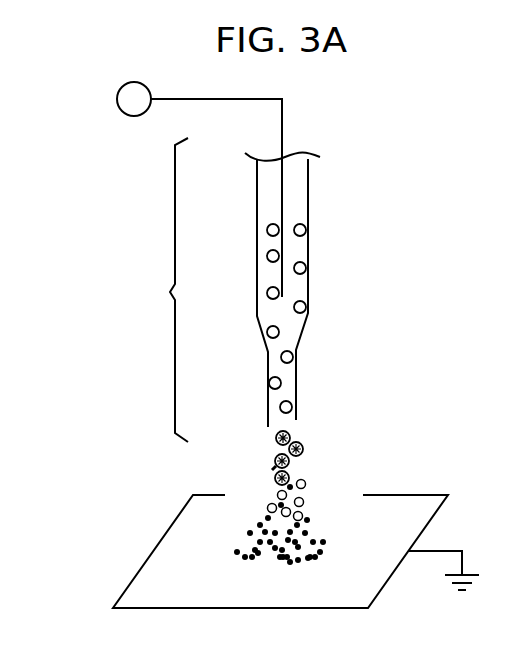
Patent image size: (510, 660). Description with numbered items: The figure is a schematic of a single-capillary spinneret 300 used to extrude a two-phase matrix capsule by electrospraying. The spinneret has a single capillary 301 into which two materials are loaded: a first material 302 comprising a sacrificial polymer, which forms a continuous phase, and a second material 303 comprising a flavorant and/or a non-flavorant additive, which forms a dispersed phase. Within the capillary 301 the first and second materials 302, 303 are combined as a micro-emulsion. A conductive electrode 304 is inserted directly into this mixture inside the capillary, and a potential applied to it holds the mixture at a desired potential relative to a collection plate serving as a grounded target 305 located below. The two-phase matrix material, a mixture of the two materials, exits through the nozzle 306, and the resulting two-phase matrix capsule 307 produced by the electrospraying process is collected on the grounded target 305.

The single-capillary spinneret 300 is at (159, 290).
The single capillary 301 is at (308, 180).
The first material 302 is at (299, 285).
The second material 303 is at (305, 307).
The conductive electrode 304 is at (282, 122).
The grounded target 305 is at (138, 568).
The nozzle 306 is at (288, 429).
The two-phase matrix capsule 307 is at (302, 472).